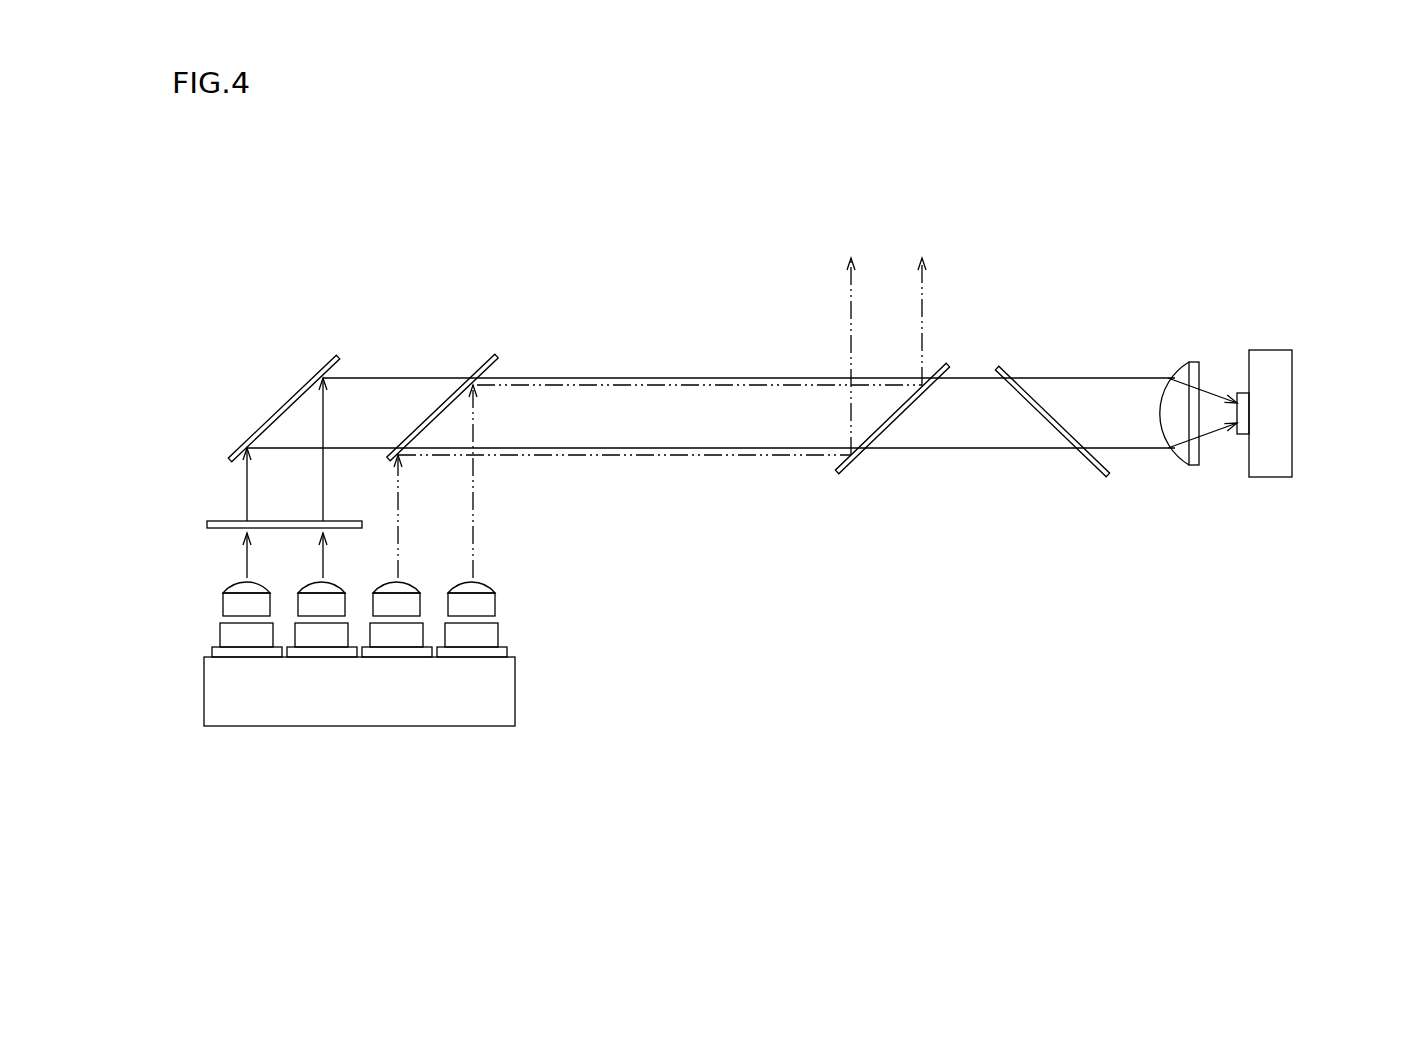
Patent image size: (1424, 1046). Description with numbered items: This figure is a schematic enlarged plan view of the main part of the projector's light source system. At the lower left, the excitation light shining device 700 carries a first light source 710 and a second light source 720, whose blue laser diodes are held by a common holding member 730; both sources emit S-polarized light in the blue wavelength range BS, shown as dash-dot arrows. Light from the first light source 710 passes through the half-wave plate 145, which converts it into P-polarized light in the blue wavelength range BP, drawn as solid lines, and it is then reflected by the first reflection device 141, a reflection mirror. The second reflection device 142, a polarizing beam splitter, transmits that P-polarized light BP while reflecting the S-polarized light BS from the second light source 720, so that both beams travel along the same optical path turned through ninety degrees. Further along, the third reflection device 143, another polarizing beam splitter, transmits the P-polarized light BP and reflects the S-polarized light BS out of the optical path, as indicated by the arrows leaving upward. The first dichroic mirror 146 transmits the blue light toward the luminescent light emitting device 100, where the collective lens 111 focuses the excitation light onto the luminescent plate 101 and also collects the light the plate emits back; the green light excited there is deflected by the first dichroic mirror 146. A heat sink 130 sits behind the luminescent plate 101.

The luminescent light emitting device 100 is at (1312, 390).
The luminescent plate 101 is at (1242, 392).
The collective lens 111 is at (1178, 368).
The heat sink 130 is at (1275, 392).
The first reflection device 141 is at (326, 357).
The second reflection device 142 is at (483, 357).
The third reflection device 143 is at (943, 363).
The half-wave plate 145 is at (207, 521).
The first dichroic mirror 146 is at (1012, 375).
The excitation light shining device 700 is at (376, 694).
The first light source 710 is at (197, 610).
The second light source 720 is at (523, 597).
The holding member 730 is at (453, 700).
The P-polarized light in the blue wavelength range BP is at (632, 448).
The S-polarized light in the blue wavelength range BS is at (922, 320).